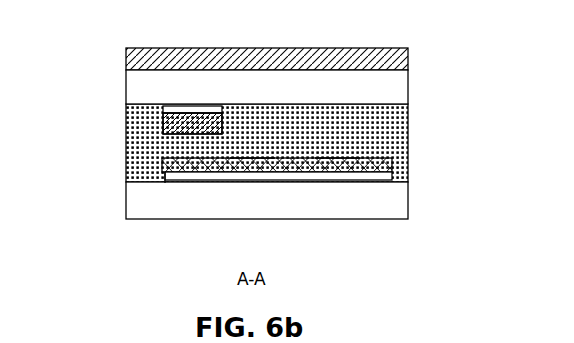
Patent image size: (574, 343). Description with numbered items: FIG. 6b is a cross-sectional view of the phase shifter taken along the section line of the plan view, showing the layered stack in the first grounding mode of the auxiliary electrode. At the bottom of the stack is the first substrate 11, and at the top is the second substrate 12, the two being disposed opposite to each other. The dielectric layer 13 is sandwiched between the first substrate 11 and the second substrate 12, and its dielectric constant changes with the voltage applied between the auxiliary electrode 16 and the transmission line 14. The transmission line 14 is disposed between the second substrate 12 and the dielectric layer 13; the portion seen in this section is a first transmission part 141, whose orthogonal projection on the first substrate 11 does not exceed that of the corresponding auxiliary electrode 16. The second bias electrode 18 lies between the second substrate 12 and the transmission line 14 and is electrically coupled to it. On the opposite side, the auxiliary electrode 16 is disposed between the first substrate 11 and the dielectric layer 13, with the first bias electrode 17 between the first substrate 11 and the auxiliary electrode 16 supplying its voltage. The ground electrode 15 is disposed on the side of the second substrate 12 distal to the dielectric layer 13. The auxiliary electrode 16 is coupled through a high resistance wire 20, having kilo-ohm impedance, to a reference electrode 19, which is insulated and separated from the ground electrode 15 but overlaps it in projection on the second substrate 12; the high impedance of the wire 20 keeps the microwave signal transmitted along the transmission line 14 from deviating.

The first substrate 11 is at (408, 208).
The second substrate 12 is at (408, 86).
The dielectric layer 13 is at (408, 128).
The transmission line 14 is at (146, 112).
The first transmission part 141 is at (193, 123).
The ground electrode 15 is at (291, 47).
The auxiliary electrode 16 is at (175, 165).
The first bias electrode 17 is at (182, 180).
The second bias electrode 18 is at (181, 108).
The reference electrode 19 is at (335, 165).
The high resistance wire 20 is at (252, 165).